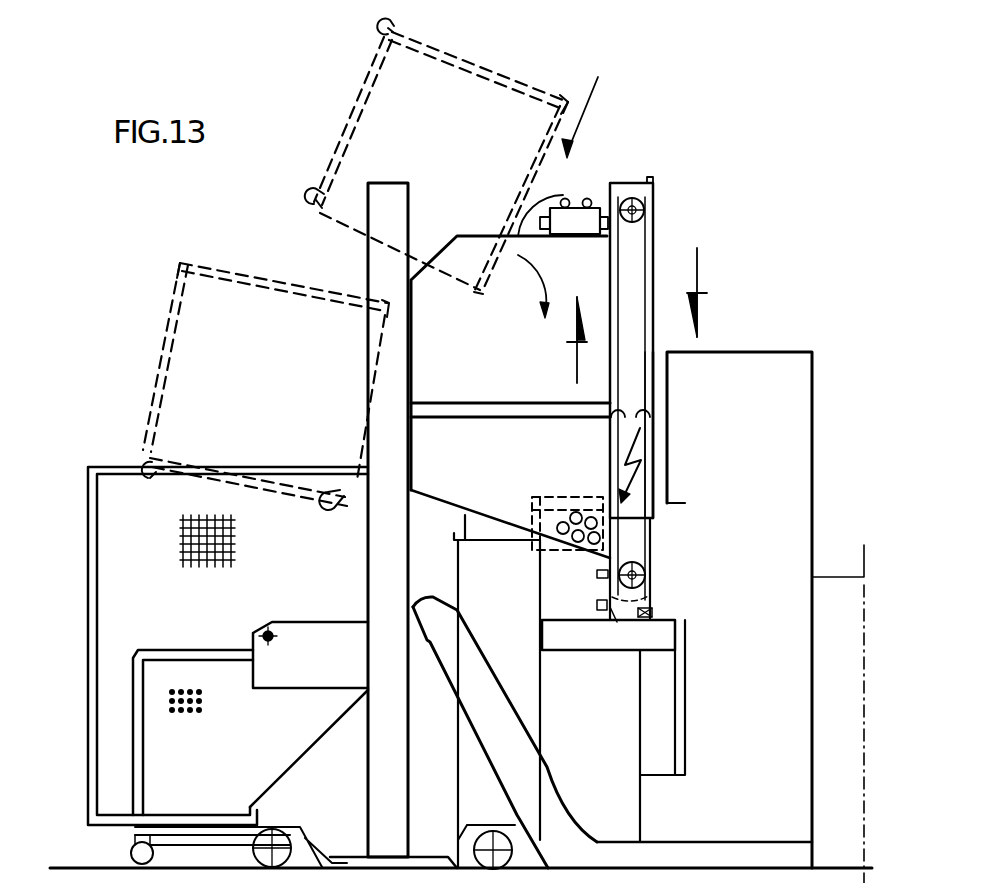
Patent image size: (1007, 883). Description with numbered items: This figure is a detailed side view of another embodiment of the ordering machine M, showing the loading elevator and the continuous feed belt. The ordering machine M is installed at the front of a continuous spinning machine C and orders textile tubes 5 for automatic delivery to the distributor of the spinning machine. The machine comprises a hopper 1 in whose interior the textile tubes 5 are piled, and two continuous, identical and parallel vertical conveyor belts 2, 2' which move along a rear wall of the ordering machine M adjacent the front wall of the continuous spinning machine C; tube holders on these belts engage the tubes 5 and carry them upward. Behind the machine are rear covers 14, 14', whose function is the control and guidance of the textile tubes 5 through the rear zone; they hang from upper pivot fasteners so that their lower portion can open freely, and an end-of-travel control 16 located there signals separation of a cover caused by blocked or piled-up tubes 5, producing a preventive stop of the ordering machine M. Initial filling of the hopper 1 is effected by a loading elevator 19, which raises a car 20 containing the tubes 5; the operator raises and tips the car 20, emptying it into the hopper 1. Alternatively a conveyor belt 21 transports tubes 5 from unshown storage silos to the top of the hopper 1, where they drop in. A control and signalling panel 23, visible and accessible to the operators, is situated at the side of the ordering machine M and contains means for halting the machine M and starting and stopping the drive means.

The hopper 1 is at (592, 267).
The vertical conveyor belt 2 is at (677, 509).
The vertical conveyor belt 2' is at (679, 399).
The textile tubes 5 is at (570, 498).
The rear cover 14 is at (697, 435).
The rear cover 14' is at (694, 435).
The end-of-travel control 16 is at (655, 612).
The loading elevator 19 is at (377, 555).
The car 20 is at (337, 153).
The conveyor belt 21 is at (573, 220).
The control and signalling panel 23 is at (640, 480).
The continuous spinning machine C is at (785, 372).
The ordering machine M is at (594, 100).